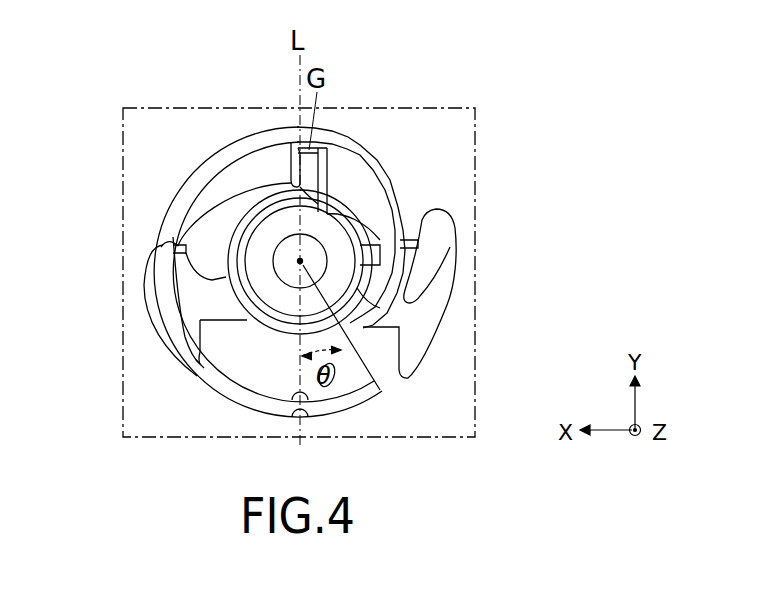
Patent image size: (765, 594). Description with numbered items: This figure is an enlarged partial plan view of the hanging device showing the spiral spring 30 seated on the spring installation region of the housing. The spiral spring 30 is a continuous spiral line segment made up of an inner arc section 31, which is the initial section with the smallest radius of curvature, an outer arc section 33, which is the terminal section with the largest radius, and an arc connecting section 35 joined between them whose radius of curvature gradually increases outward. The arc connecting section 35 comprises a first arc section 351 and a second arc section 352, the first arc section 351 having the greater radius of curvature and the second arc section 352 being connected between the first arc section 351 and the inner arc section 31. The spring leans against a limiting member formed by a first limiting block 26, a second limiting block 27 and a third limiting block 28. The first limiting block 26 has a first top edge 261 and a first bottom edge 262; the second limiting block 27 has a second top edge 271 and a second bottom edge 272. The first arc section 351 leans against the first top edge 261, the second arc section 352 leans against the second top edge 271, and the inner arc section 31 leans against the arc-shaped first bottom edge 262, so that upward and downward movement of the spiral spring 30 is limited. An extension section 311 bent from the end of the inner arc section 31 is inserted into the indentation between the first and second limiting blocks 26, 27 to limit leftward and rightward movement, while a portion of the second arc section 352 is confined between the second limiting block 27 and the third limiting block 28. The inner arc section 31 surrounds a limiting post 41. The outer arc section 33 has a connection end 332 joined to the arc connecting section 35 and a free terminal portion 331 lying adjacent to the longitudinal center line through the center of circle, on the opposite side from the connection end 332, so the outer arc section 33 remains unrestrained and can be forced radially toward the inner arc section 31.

The spiral spring 30 is at (158, 140).
The arc connecting section 35 is at (284, 220).
The first arc section 351 is at (243, 135).
The second arc section 352 is at (373, 150).
The extension section 311 is at (306, 170).
The inner arc section 31 is at (236, 286).
The first limiting block 26 is at (174, 265).
The first top edge 261 is at (232, 182).
The first bottom edge 262 is at (214, 246).
The second limiting block 27 is at (434, 243).
The second top edge 271 is at (393, 198).
The second bottom edge 272 is at (364, 237).
The third limiting block 28 is at (418, 288).
The outer arc section 33 is at (257, 399).
The terminal portion 331 is at (380, 390).
The connection end 332 is at (202, 364).
The limiting post 41 is at (275, 292).